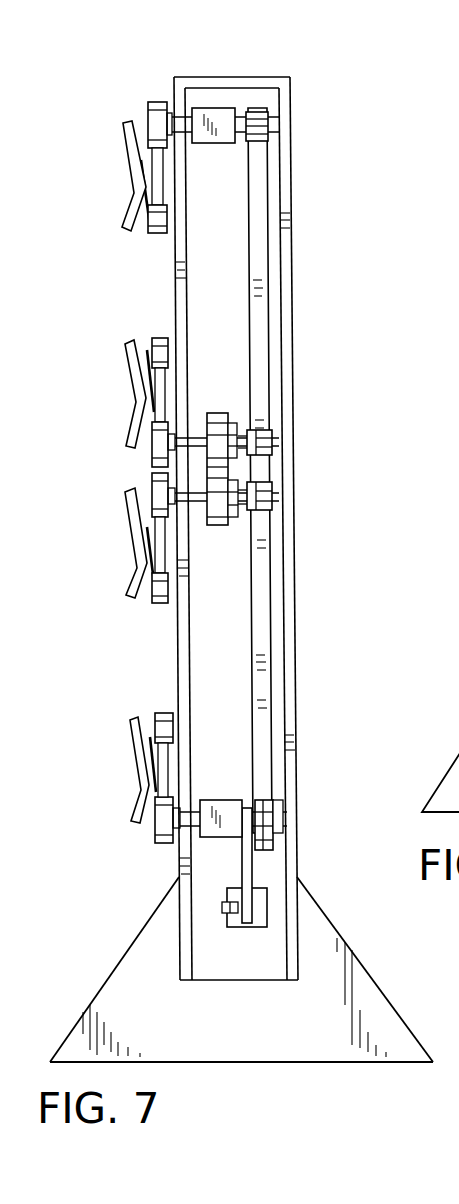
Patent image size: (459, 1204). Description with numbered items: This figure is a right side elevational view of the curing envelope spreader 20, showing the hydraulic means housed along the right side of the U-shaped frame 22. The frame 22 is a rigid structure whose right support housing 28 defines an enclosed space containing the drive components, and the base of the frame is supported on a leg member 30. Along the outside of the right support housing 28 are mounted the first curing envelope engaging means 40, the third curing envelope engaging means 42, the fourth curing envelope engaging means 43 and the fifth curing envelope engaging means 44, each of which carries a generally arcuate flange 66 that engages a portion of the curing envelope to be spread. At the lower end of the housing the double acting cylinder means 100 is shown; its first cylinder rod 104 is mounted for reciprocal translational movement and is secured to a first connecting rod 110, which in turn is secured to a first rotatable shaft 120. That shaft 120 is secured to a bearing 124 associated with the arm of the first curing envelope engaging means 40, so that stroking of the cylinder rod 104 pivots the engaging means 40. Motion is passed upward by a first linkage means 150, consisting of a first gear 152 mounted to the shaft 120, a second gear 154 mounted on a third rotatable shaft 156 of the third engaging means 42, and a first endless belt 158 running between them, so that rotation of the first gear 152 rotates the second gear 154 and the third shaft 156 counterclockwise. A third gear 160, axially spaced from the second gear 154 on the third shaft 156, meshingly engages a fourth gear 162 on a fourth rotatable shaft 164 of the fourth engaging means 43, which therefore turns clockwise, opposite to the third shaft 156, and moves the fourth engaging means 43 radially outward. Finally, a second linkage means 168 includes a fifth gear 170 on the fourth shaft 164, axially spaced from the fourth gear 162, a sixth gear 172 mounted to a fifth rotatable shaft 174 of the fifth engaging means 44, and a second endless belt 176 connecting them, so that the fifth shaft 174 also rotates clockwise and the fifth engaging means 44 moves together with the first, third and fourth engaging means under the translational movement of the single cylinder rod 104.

The curing envelope spreader 20 is at (250, 61).
The U-shaped frame 22 is at (270, 71).
The right support housing 28 is at (287, 118).
The leg member 30 is at (352, 1003).
The first curing envelope engaging means 40 is at (129, 718).
The third curing envelope engaging means 42 is at (124, 499).
The fourth curing envelope engaging means 43 is at (124, 354).
The fifth curing envelope engaging means 44 is at (129, 110).
The flange 66 is at (140, 783).
The double acting cylinder means 100 is at (252, 940).
The first cylinder rod 104 is at (228, 914).
The first connecting rod 110 is at (255, 873).
The first rotatable shaft 120 is at (278, 806).
The bearing 124 is at (164, 847).
The first linkage means 150 is at (277, 690).
The first gear 152 is at (264, 822).
The second gear 154 is at (270, 503).
The third rotatable shaft 156 is at (245, 481).
The first endless belt 158 is at (273, 617).
The third gear 160 is at (221, 526).
The fourth gear 162 is at (217, 412).
The fourth rotatable shaft 164 is at (272, 447).
The second linkage means 168 is at (270, 342).
The fifth gear 170 is at (272, 428).
The sixth gear 172 is at (264, 127).
The fifth rotatable shaft 174 is at (238, 108).
The second endless belt 176 is at (257, 277).